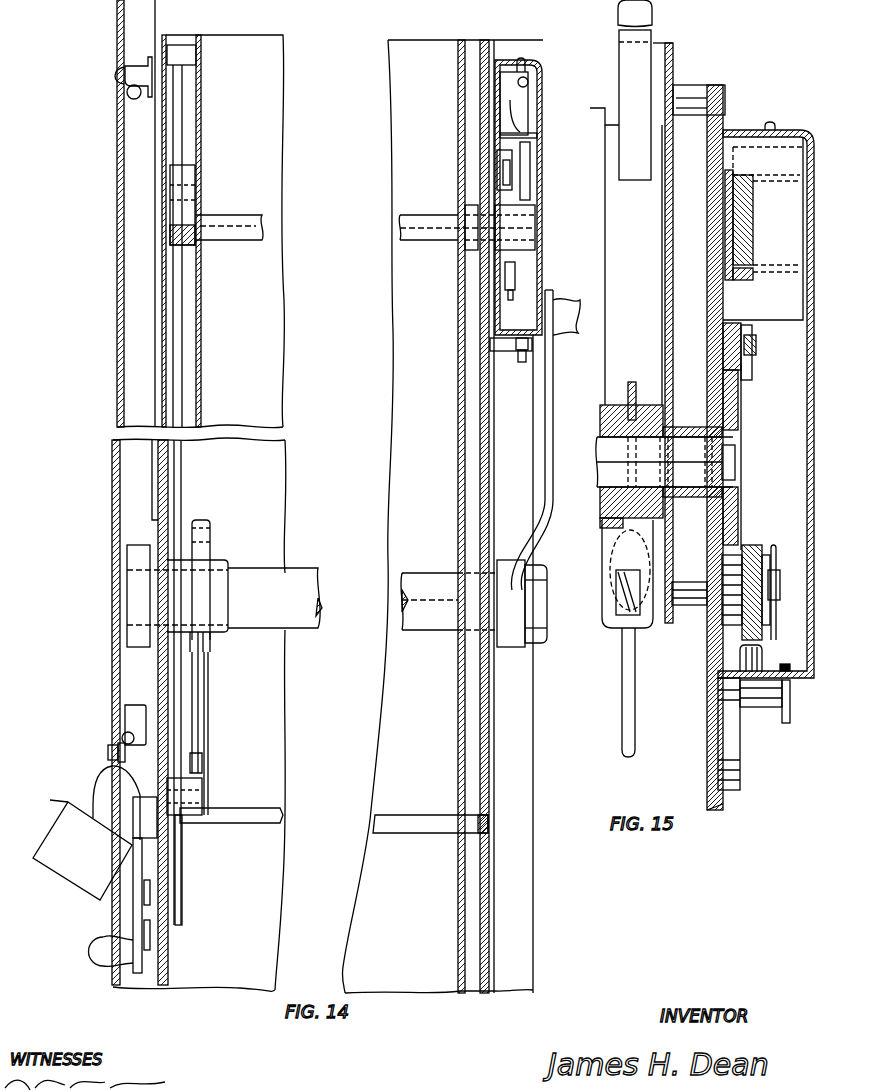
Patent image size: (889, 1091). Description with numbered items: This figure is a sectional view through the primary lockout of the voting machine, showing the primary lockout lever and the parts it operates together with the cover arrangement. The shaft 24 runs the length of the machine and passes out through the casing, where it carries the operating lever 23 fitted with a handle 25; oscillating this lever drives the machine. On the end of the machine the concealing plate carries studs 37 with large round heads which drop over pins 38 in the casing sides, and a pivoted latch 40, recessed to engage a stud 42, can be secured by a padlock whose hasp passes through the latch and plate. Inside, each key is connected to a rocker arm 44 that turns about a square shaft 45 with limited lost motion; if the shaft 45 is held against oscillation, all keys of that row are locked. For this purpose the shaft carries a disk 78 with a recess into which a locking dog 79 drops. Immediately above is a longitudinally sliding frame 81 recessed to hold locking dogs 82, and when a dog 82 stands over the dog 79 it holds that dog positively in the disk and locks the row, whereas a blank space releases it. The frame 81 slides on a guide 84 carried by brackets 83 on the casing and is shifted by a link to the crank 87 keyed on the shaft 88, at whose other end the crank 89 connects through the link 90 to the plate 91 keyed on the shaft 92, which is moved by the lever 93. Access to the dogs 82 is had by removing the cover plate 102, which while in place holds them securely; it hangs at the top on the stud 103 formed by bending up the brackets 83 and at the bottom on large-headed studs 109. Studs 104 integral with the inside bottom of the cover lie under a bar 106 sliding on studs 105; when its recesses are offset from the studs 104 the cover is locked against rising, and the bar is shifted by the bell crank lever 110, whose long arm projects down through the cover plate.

In FIG. 14, the operating lever 23 is at (548, 452).
In FIG. 14, the shaft 24 is at (444, 630).
In FIG. 14, the handle 25 is at (563, 315).
In FIG. 14, the studs 37 is at (132, 76).
In FIG. 14, the pins 38 is at (136, 100).
In FIG. 14, the latch 40 is at (122, 798).
In FIG. 14, the stud 42 is at (108, 752).
In FIG. 15, the rocker arm 44 is at (639, 388).
In FIG. 15, the square shaft 45 is at (716, 455).
In FIG. 15, the disk 78 is at (740, 420).
In FIG. 15, the locking dog 79 is at (748, 376).
In FIG. 15, the frame 81 is at (713, 216).
In FIG. 15, the locking dog 82 is at (777, 318).
In FIG. 14, the brackets 83 is at (537, 136).
In FIG. 14, the guide 84 is at (508, 126).
In FIG. 15, the guide 84 is at (752, 228).
In FIG. 14, the crank 87 is at (529, 182).
In FIG. 14, the shaft 88 is at (243, 242).
In FIG. 14, the crank 89 is at (192, 197).
In FIG. 14, the link 90 is at (178, 490).
In FIG. 14, the plate 91 is at (183, 860).
In FIG. 14, the shaft 92 is at (230, 812).
In FIG. 14, the lever 93 is at (137, 928).
In FIG. 14, the cover plate 102 is at (537, 74).
In FIG. 15, the cover plate 102 is at (794, 130).
In FIG. 14, the stud 103 is at (524, 58).
In FIG. 15, the stud 103 is at (768, 122).
In FIG. 14, the studs 104 is at (523, 363).
In FIG. 15, the studs 104 is at (748, 659).
In FIG. 15, the studs 105 is at (779, 571).
In FIG. 14, the bar 106 is at (513, 272).
In FIG. 15, the bar 106 is at (761, 551).
In FIG. 15, the studs 109 is at (783, 724).
In FIG. 15, the bell crank lever 110 is at (734, 752).